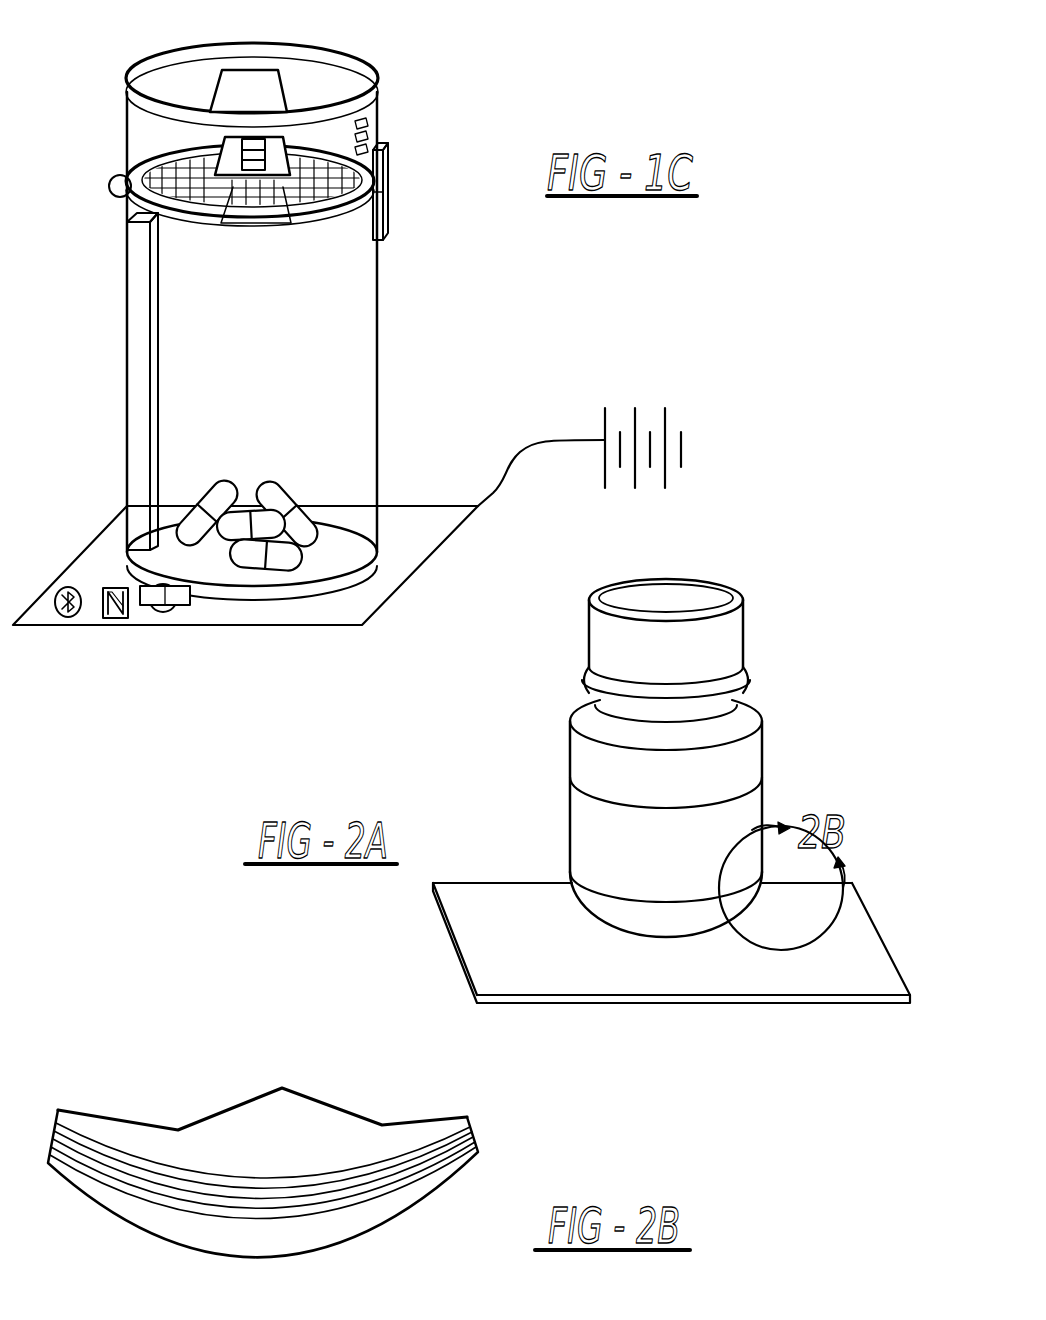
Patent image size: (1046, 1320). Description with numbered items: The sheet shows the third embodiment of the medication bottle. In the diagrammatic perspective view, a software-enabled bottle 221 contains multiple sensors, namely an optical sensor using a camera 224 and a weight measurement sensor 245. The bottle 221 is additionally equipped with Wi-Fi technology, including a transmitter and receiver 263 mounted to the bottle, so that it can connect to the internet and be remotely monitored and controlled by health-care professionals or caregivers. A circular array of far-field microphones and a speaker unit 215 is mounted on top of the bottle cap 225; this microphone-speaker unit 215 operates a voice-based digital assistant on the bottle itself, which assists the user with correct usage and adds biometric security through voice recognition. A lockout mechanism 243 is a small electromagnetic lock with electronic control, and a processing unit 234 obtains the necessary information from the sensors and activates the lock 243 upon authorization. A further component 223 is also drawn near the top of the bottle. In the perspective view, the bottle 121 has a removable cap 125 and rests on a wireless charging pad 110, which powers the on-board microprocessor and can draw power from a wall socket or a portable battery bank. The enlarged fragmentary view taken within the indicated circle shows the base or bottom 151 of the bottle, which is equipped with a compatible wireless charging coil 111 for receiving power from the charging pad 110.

In FIG. 1C, the microphone-speaker unit 215 is at (192, 43).
In FIG. 1C, the dispensing module 223 is at (256, 85).
In FIG. 1C, the bottle cap 225 is at (378, 113).
In FIG. 1C, the lockout mechanism 243 is at (377, 166).
In FIG. 1C, the camera 224 is at (257, 160).
In FIG. 1C, the processing unit 234 is at (258, 193).
In FIG. 1C, the software-enabled bottle 221 is at (428, 325).
In FIG. 1C, the weight measurement sensor 245 is at (341, 558).
In FIG. 1C, the transmitter and receiver 263 is at (166, 612).
In FIG. 2A, the removable cap 125 is at (727, 638).
In FIG. 2A, the bottle 121 is at (797, 728).
In FIG. 2A, the base or bottom 151 is at (620, 932).
In FIG. 2B, the base or bottom 151 is at (187, 1237).
In FIG. 2A, the wireless charging pad 110 is at (727, 973).
In FIG. 2B, the wireless charging coil 111 is at (172, 1168).